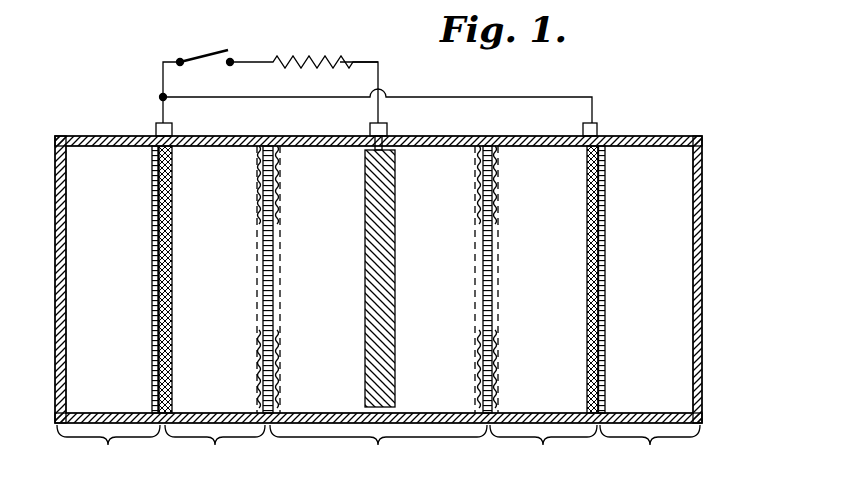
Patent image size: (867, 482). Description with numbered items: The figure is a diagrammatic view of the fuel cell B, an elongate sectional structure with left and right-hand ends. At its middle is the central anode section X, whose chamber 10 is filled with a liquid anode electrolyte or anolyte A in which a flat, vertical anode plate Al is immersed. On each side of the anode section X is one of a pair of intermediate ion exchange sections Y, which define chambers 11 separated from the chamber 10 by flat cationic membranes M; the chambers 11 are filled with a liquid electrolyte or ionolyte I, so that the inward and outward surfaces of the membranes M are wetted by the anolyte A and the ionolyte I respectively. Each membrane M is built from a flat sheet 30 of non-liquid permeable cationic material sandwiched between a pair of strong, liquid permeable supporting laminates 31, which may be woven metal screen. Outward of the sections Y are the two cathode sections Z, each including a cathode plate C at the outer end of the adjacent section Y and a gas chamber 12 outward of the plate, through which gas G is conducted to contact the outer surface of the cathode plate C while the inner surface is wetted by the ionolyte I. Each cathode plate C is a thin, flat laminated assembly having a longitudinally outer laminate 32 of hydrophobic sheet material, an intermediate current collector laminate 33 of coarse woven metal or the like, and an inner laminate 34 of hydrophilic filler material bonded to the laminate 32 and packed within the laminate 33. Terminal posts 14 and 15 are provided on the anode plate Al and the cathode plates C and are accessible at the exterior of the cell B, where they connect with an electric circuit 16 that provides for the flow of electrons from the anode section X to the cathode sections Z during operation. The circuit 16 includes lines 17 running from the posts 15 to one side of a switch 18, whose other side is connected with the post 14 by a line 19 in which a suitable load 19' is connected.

The chamber 10 is at (342, 278).
The chambers 11 is at (379, 267).
The gas chambers 12 is at (379, 277).
The terminal post 14 is at (390, 126).
The terminal posts 15 is at (174, 128).
The electric circuit 16 is at (138, 91).
The lines 17 is at (160, 72).
The switch 18 is at (195, 58).
The line 19 is at (304, 73).
The load 19' is at (350, 43).
The sheet 30 is at (483, 252).
The supporting laminates 31 is at (484, 350).
The outer laminate 32 is at (152, 364).
The current collector laminate 33 is at (172, 362).
The inner laminate 34 is at (172, 395).
The anolyte A is at (304, 226).
The anode plate Al is at (362, 312).
The fuel cell B is at (696, 126).
The cathode plates C is at (150, 196).
The gas G is at (373, 294).
The ionolyte I is at (370, 245).
The cationic membranes M is at (260, 254).
The central anode section X is at (378, 453).
The intermediate ion exchange sections Y is at (381, 453).
The cathode sections Z is at (378, 453).